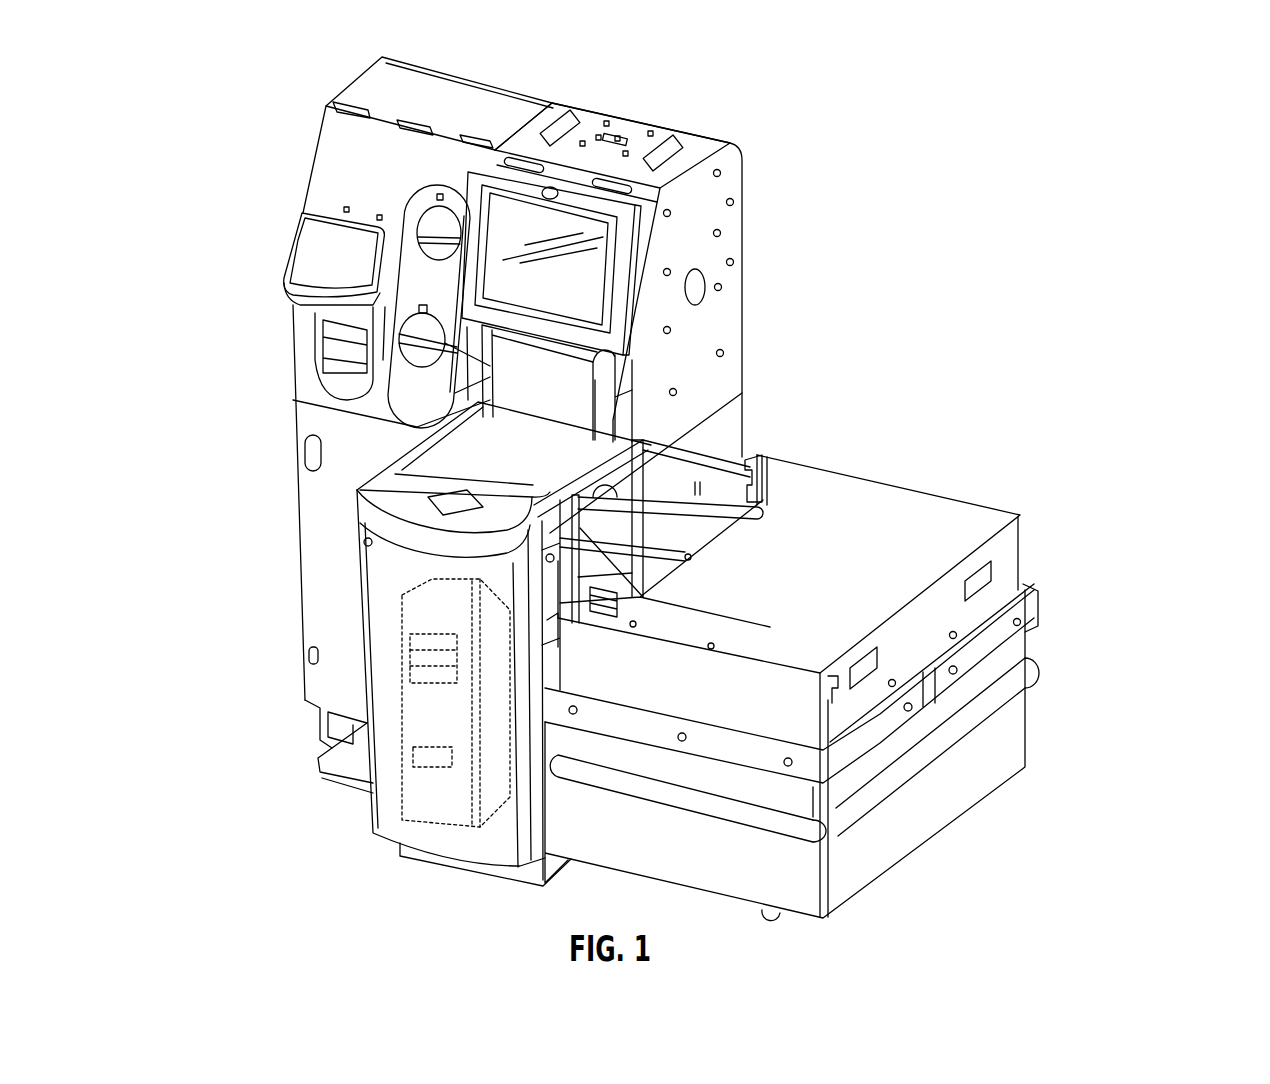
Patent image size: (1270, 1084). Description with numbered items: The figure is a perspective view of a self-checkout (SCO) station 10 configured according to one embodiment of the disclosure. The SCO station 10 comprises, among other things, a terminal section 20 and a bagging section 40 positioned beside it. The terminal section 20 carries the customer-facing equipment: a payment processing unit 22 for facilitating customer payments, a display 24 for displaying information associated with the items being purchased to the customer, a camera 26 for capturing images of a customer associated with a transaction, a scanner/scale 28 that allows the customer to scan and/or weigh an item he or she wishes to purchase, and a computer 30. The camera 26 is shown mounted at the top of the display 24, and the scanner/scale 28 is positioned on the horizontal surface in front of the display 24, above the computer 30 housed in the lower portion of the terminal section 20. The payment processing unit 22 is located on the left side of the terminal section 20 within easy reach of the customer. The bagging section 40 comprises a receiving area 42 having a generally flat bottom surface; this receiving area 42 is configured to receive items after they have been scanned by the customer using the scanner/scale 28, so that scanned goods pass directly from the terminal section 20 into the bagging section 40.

The SCO station 10 is at (1157, 130).
The terminal section 20 is at (263, 103).
The payment processing unit 22 is at (313, 190).
The display 24 is at (533, 296).
The camera 26 is at (554, 188).
The scanner/scale 28 is at (521, 467).
The computer 30 is at (422, 698).
The bagging section 40 is at (965, 422).
The receiving area 42 is at (781, 584).